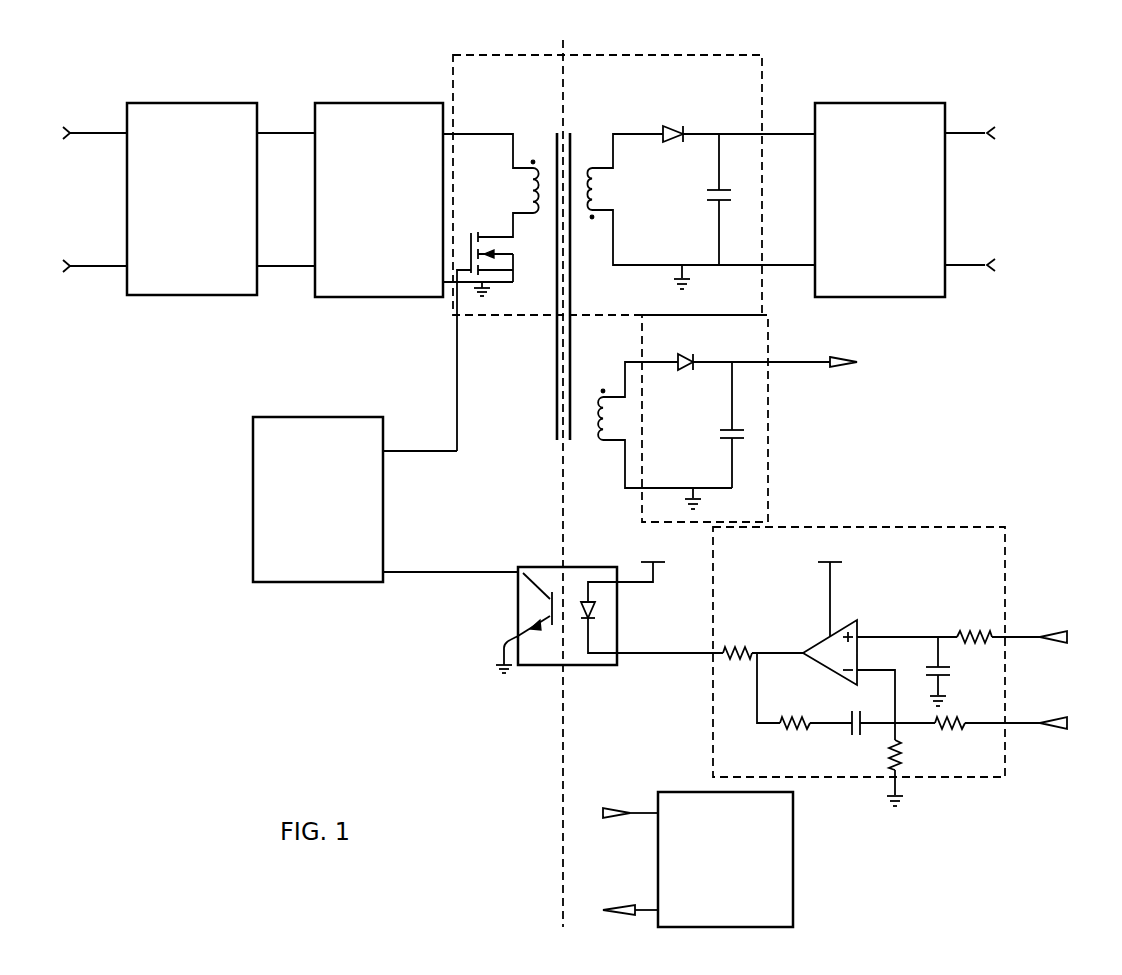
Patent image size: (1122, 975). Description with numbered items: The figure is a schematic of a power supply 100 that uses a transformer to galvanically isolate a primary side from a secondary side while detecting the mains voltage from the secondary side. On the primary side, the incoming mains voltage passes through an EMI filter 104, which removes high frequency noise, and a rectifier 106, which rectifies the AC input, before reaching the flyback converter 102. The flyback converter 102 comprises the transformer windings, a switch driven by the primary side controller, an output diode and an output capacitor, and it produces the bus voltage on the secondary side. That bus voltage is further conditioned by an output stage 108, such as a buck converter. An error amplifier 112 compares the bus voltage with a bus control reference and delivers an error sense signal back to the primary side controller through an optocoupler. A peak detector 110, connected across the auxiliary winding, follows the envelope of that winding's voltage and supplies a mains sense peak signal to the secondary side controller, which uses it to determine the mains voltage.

The power supply 100 is at (118, 79).
The flyback converter 102 is at (450, 90).
The EMI filter 104 is at (127, 121).
The rectifier 106 is at (316, 108).
The output stage 108 is at (946, 110).
The peak detector 110 is at (768, 340).
The error amplifier 112 is at (712, 572).